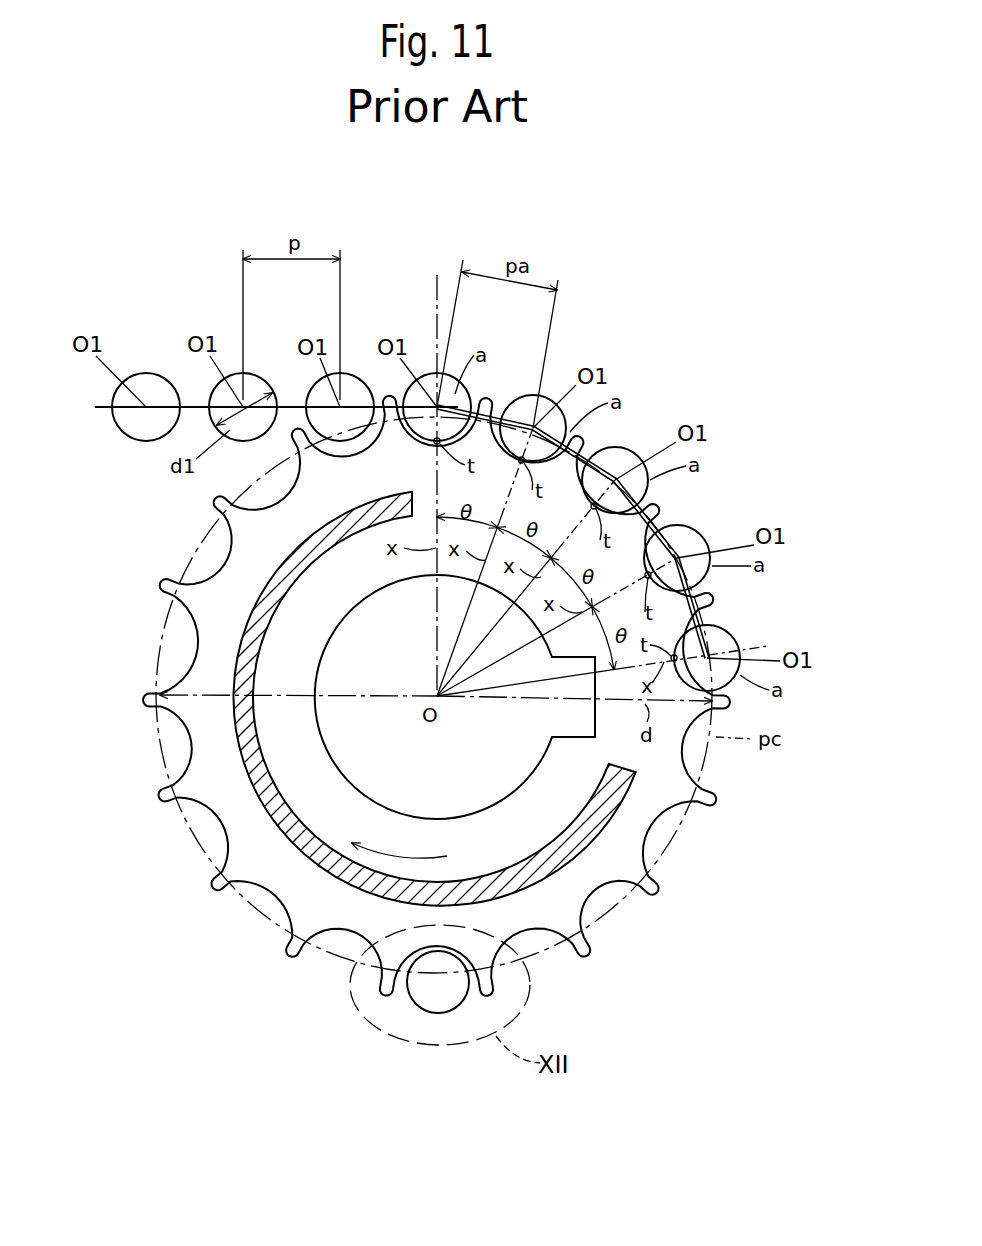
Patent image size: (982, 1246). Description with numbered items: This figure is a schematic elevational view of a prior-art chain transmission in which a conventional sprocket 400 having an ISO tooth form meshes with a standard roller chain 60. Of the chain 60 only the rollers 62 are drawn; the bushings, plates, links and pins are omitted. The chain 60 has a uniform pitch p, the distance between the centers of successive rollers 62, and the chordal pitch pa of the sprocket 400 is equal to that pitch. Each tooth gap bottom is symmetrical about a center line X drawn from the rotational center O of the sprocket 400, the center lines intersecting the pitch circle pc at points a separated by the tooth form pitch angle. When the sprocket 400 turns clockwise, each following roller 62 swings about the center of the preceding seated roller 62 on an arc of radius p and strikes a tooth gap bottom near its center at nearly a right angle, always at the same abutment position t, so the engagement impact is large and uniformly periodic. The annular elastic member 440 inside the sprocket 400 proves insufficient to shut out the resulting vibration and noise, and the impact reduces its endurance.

The standard roller chain 60 is at (158, 298).
The roller 62 is at (141, 373).
The sprocket 400 is at (560, 910).
The elastic member 440 is at (253, 788).